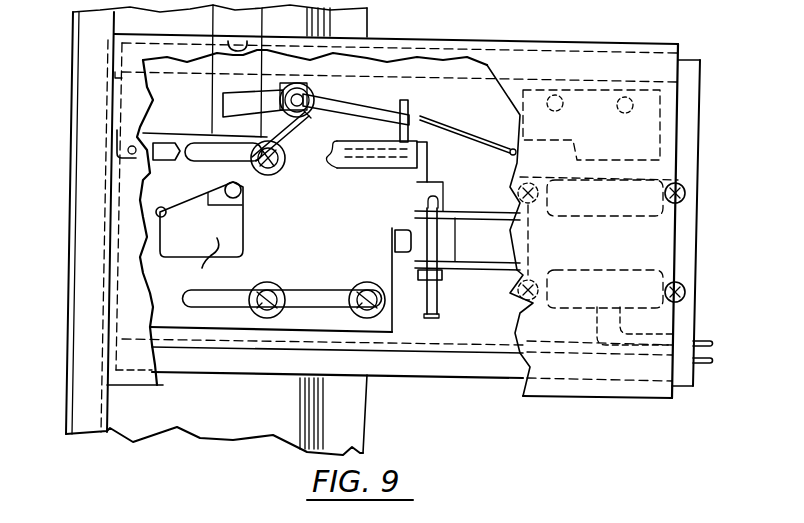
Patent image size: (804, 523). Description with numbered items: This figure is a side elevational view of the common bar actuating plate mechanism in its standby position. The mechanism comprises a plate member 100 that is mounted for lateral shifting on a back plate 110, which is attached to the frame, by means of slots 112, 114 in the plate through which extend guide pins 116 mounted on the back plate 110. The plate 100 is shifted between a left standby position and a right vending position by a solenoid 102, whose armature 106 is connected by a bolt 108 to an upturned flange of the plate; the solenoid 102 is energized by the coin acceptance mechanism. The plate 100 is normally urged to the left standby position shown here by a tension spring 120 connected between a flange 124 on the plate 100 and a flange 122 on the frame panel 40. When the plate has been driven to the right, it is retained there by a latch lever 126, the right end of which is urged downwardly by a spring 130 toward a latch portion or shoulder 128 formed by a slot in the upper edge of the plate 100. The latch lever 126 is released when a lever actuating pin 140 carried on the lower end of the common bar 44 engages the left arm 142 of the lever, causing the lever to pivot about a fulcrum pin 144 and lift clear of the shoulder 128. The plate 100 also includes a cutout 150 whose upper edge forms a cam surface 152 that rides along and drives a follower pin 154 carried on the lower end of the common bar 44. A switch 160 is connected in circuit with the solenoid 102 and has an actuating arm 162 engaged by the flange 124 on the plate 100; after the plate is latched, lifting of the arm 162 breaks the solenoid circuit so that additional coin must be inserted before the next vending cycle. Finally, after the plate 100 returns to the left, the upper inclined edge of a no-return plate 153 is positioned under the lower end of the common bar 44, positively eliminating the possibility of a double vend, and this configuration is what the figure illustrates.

The frame panel 40 is at (60, 267).
The common bar 44 is at (263, 24).
The plate member 100 is at (366, 350).
The solenoid 102 is at (648, 282).
The armature 106 is at (493, 224).
The bolt 108 is at (424, 228).
The back plate 110 is at (485, 322).
The slot 112 is at (230, 162).
The slot 114 is at (336, 266).
The guide pin 116 is at (262, 175).
The tension spring 120 is at (385, 169).
The flange 122 is at (117, 134).
The flange 124 is at (428, 163).
The latch lever 126 is at (409, 105).
The latch portion or shoulder 128 is at (284, 158).
The spring 130 is at (376, 115).
The lever actuating pin 140 is at (229, 41).
The left arm 142 is at (223, 101).
The fulcrum pin 144 is at (281, 94).
The cutout 150 is at (228, 221).
The cam surface 152 is at (166, 215).
The no-return plate 153 is at (203, 262).
The follower pin 154 is at (240, 196).
The switch 160 is at (648, 131).
The actuating arm 162 is at (465, 132).